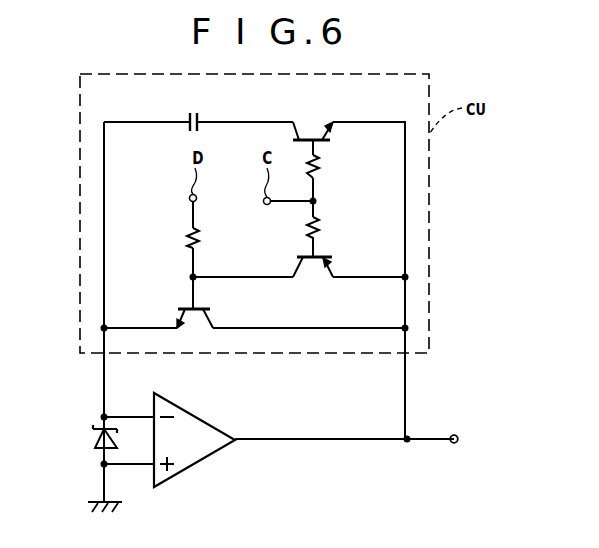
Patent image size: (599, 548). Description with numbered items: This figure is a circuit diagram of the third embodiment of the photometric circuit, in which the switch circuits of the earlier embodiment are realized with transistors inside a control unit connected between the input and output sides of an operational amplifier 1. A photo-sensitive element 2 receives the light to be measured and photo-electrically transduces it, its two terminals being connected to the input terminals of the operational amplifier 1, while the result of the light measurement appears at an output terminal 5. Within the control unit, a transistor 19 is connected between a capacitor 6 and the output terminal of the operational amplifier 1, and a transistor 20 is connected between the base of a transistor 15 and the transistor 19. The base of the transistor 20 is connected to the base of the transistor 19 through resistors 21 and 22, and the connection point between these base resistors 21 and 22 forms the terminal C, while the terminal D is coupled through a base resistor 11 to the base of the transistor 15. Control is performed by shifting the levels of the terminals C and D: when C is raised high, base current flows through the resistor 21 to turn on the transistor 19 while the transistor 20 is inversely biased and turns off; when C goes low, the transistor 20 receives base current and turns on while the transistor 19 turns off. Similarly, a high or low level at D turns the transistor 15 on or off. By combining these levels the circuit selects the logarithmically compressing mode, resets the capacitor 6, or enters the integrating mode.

The operational amplifier 1 is at (203, 418).
The photo-sensitive element 2 is at (117, 439).
The output terminal 5 is at (454, 435).
The capacitor 6 is at (194, 113).
The resistor 11 is at (199, 241).
The transistor 15 is at (208, 299).
The transistor 19 is at (312, 138).
The transistor 20 is at (313, 264).
The resistor 21 is at (317, 170).
The resistor 22 is at (318, 228).